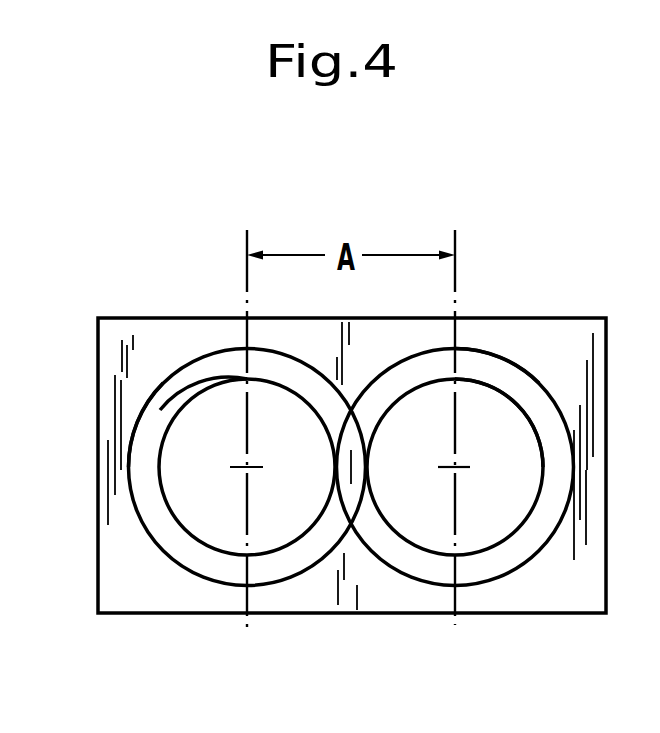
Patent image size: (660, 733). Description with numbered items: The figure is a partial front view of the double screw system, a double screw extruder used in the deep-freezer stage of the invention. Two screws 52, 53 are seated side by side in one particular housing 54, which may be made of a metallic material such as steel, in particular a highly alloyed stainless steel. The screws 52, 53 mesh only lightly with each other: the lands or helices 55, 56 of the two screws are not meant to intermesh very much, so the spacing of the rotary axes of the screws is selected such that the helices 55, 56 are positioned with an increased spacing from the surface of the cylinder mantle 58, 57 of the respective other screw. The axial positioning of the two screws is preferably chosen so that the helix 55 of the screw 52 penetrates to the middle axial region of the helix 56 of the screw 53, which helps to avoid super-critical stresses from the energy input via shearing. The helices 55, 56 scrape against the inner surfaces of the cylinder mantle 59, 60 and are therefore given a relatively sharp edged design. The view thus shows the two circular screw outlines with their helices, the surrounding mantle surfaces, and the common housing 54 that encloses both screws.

The screw 52 is at (217, 532).
The screw 53 is at (479, 524).
The housing 54 is at (357, 588).
The helix 55 is at (157, 526).
The helix 56 is at (538, 533).
The cylinder mantle 57 is at (184, 384).
The cylinder mantle 58 is at (519, 384).
The inner surface of cylinder mantle 59 is at (146, 416).
The inner surface of cylinder mantle 60 is at (487, 373).